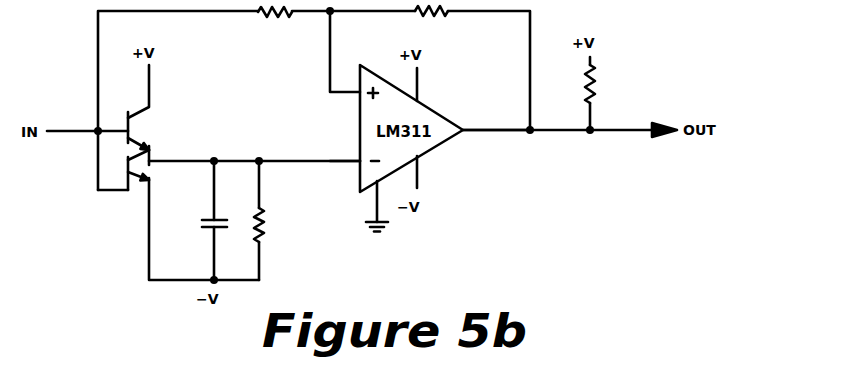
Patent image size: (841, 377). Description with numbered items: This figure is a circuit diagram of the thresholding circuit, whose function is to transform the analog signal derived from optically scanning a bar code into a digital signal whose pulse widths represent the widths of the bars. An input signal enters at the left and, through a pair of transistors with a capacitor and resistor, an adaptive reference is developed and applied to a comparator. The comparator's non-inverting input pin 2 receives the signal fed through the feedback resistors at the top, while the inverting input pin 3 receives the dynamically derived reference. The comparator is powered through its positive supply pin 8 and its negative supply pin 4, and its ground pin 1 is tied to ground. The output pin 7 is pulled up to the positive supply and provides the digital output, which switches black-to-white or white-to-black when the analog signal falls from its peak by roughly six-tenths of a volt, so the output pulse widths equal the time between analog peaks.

The LM311 ground pin 1 is at (379, 206).
The LM311 non-inverting input pin 2 is at (345, 51).
The LM311 inverting input pin 3 is at (345, 151).
The LM311 negative supply pin 4 is at (426, 172).
The LM311 output pin 7 is at (496, 120).
The LM311 positive supply pin 8 is at (425, 84).